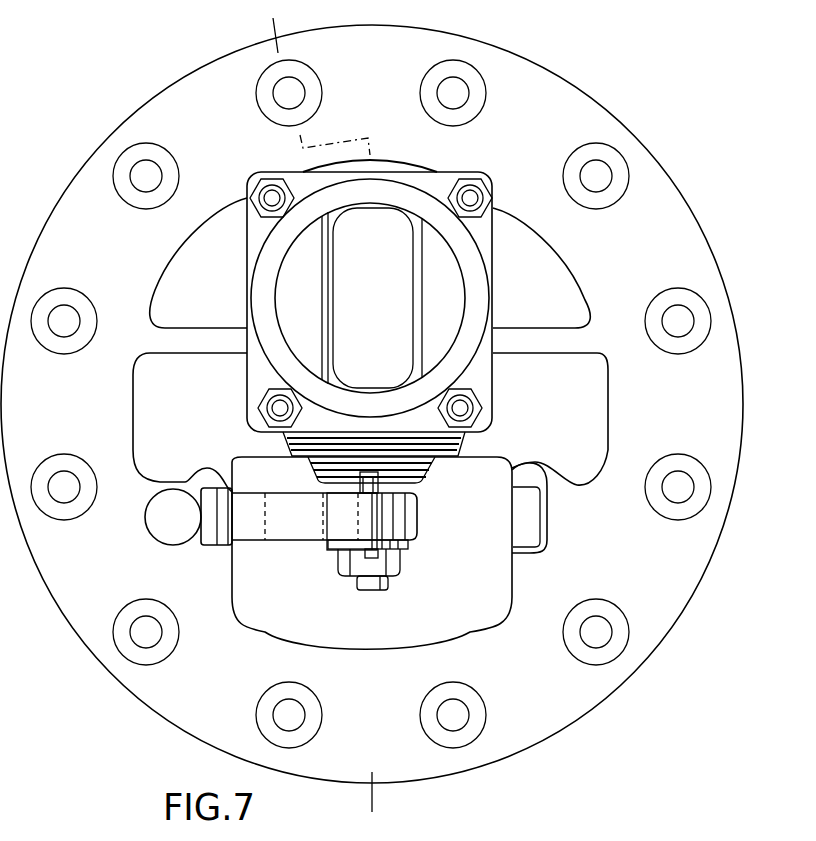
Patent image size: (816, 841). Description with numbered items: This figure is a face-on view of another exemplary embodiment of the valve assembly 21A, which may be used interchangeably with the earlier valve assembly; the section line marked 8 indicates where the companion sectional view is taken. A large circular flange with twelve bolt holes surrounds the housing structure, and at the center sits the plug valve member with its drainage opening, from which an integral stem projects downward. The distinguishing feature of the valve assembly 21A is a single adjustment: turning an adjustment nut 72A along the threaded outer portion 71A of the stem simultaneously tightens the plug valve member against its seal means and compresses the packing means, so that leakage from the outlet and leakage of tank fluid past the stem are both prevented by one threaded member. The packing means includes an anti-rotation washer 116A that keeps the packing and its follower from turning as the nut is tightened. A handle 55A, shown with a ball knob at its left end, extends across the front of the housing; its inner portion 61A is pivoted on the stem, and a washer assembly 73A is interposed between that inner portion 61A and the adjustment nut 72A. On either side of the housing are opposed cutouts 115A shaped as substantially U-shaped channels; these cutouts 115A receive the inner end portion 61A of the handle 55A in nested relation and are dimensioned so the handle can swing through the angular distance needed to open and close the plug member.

The section line 8- 8 is at (295, 13).
The valve assembly 21A is at (663, 122).
The handle 55A is at (257, 543).
The inner portion of the handle 61A is at (317, 493).
The threaded outer portion of the stem 71A is at (374, 590).
The adjustment nut 72A is at (402, 562).
The washer assembly 73A is at (330, 554).
The cutouts 115A is at (217, 552).
The anti-rotation washer 116A is at (407, 486).